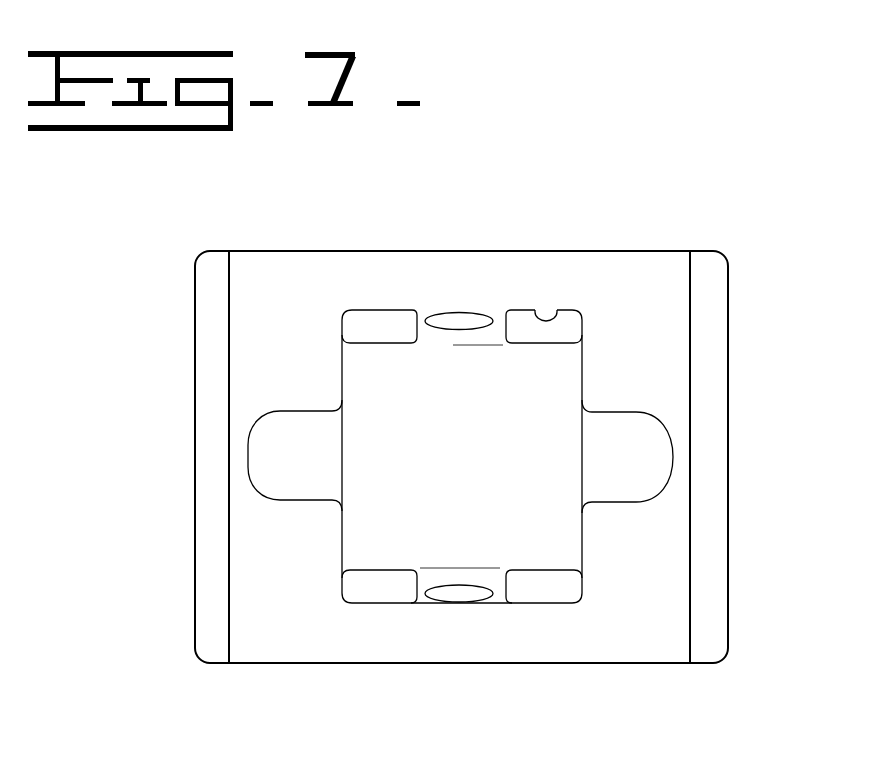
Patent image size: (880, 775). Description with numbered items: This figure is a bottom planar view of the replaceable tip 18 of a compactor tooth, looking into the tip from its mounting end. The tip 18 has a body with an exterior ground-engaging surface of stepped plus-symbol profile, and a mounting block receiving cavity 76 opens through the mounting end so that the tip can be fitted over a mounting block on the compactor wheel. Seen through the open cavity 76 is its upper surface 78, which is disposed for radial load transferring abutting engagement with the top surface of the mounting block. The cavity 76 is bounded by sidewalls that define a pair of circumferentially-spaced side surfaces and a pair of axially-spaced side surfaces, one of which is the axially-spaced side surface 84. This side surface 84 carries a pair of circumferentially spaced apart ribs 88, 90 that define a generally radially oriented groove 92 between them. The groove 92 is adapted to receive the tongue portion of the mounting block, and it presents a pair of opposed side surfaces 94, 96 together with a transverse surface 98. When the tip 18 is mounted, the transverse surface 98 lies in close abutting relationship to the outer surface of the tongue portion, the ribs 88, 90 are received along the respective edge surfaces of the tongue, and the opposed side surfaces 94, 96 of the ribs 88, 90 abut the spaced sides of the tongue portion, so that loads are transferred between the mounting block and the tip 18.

The replaceable tip 18 is at (713, 212).
The mounting block receiving cavity 76 is at (537, 446).
The upper surface 78 is at (388, 430).
The axially-spaced side surface 84 is at (538, 312).
The rib 88 is at (403, 333).
The rib 90 is at (513, 337).
The groove 92 is at (465, 342).
The opposed side surface 94 is at (423, 339).
The opposed side surface 96 is at (497, 335).
The transverse surface 98 is at (473, 318).